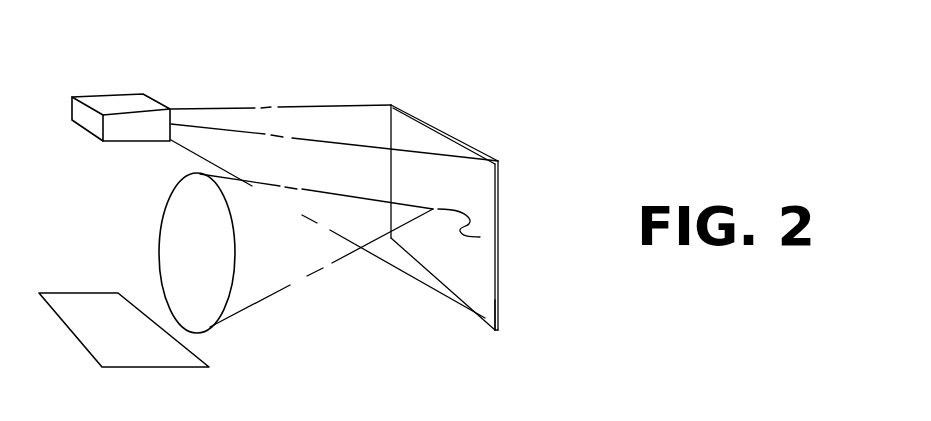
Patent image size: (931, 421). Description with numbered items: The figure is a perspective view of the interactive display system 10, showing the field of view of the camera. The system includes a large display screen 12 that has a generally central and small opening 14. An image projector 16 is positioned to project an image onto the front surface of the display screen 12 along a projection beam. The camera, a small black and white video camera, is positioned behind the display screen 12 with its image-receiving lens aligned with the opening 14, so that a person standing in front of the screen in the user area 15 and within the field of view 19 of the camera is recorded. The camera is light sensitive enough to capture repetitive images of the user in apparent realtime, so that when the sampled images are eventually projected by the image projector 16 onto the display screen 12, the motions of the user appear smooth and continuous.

The interactive display system 10 is at (443, 102).
The display screen 12 is at (485, 297).
The opening 14 is at (480, 237).
The user area 15 is at (88, 295).
The image projector 16 is at (97, 102).
The field of view 19 is at (282, 268).